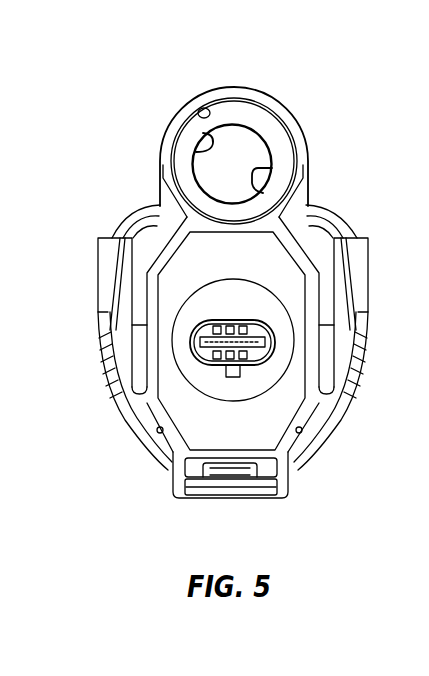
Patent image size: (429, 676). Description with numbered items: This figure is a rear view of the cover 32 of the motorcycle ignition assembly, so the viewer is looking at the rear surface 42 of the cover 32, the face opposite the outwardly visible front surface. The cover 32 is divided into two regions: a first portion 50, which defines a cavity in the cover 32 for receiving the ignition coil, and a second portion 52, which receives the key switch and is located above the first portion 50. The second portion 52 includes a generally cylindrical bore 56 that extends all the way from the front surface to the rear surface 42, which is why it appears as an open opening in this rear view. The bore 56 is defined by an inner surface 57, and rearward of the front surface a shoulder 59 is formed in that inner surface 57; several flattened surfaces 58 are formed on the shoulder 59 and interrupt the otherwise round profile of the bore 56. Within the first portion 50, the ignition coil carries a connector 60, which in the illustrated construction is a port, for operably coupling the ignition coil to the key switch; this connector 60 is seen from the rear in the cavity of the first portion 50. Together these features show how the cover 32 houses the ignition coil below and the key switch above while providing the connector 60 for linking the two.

The cover 32 is at (102, 417).
The rear surface 42 is at (302, 431).
The first portion 50 is at (361, 392).
The second portion 52 is at (328, 145).
The bore 56 is at (240, 147).
The inner surface 57 is at (199, 114).
The flattened surfaces 58 is at (198, 151).
The shoulder 59 is at (276, 132).
The connector 60 is at (243, 320).